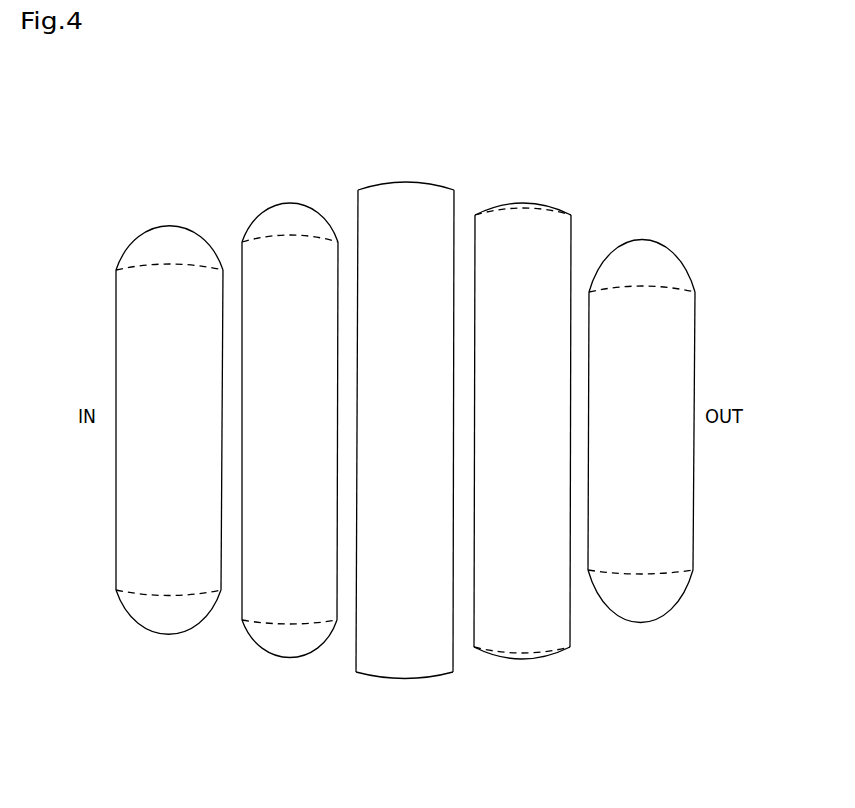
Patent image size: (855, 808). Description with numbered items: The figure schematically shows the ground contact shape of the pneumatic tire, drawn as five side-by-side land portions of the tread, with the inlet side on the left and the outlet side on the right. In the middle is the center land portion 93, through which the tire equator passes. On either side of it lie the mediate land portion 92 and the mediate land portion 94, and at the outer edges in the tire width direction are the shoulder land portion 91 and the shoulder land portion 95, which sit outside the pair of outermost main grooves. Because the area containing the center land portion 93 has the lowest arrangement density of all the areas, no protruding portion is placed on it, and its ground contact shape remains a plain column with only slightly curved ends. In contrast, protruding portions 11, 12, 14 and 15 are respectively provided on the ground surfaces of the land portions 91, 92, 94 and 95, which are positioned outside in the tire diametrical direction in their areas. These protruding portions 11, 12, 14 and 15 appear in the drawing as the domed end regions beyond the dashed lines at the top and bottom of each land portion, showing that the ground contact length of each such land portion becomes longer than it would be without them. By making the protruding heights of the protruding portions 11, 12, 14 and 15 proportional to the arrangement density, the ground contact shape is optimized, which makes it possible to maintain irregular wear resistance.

The shoulder land portion 91 is at (170, 208).
The mediate land portion 92 is at (292, 186).
The center land portion 93 is at (408, 168).
The mediate land portion 94 is at (525, 186).
The shoulder land portion 95 is at (642, 223).
The protruding portion 11 is at (187, 243).
The protruding portion 12 is at (305, 217).
The protruding portion 14 is at (538, 205).
The protruding portion 15 is at (667, 263).